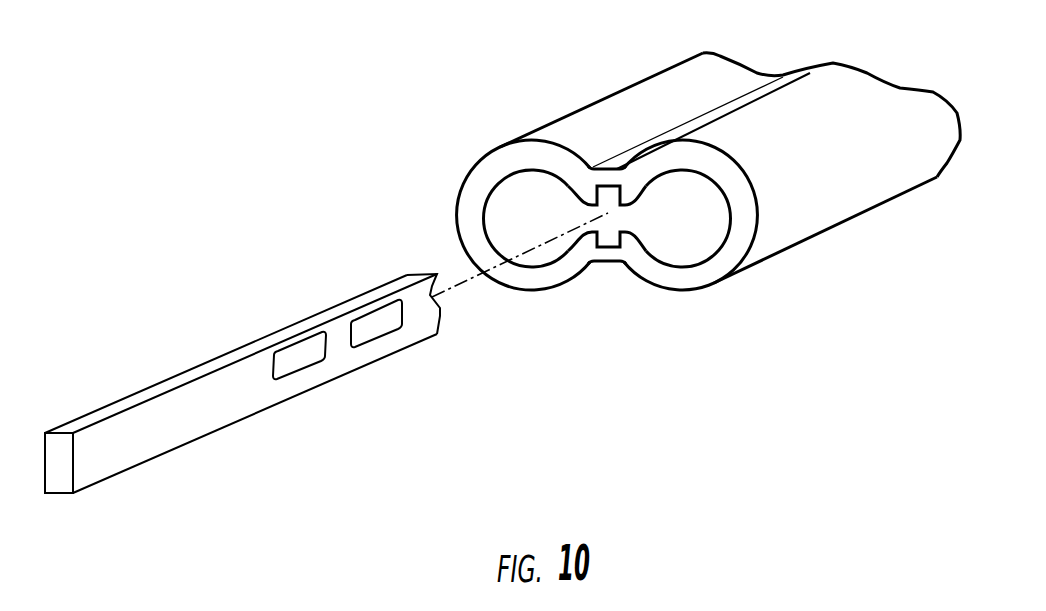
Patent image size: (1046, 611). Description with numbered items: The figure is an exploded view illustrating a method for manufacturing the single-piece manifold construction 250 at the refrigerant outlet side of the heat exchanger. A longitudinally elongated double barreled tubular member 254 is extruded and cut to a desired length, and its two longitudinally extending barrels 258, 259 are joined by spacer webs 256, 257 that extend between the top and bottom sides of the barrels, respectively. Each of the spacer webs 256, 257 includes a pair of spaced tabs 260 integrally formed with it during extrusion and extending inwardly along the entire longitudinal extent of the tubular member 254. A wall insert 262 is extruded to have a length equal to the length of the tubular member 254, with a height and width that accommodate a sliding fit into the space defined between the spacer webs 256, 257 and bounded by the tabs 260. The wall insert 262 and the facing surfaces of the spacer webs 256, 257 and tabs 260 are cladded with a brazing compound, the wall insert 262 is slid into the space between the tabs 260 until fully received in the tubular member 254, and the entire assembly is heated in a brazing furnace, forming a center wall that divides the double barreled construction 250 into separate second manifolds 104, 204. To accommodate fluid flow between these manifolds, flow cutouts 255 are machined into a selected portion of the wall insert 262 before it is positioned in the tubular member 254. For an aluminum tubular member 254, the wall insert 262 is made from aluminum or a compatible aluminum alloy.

The single-piece manifold construction 250 is at (425, 130).
The tubular member 254 is at (648, 82).
The spacer web 256 is at (748, 100).
The spacer web 257 is at (607, 264).
The barrel 258 is at (810, 175).
The barrel 259 is at (605, 118).
The second manifold 204 is at (488, 228).
The second manifold 104 is at (718, 245).
The tabs 260 is at (590, 215).
The wall insert 262 is at (240, 427).
The flow cutouts 255 is at (303, 355).